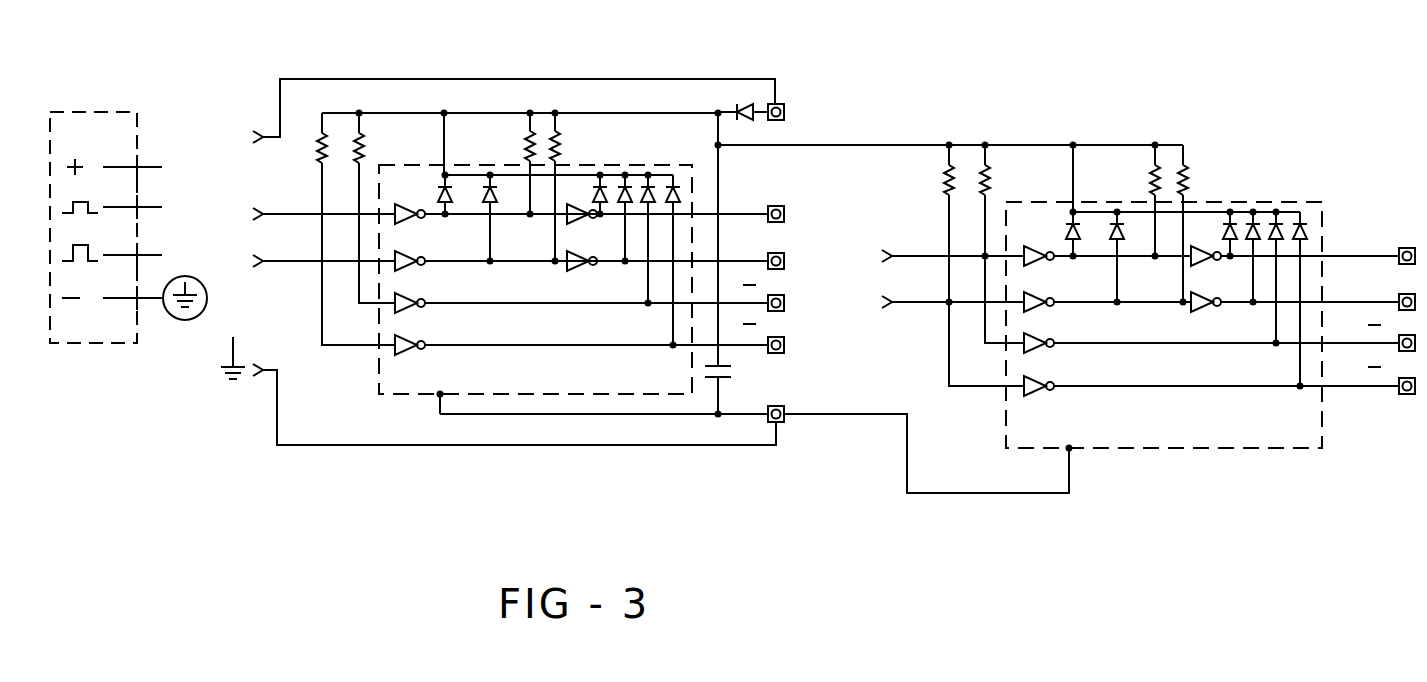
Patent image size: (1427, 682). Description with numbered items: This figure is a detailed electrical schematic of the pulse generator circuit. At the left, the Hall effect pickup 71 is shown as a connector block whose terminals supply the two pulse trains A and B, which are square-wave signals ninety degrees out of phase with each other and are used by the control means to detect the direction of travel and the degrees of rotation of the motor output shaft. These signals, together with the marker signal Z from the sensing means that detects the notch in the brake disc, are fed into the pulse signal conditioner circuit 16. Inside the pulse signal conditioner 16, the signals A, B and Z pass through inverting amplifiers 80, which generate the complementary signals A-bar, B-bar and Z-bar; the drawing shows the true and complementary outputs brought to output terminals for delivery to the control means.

The Hall effect pickup 71 is at (103, 126).
The pulse signal conditioner circuit 16 is at (614, 42).
The inverting amplifiers 80 is at (406, 203).